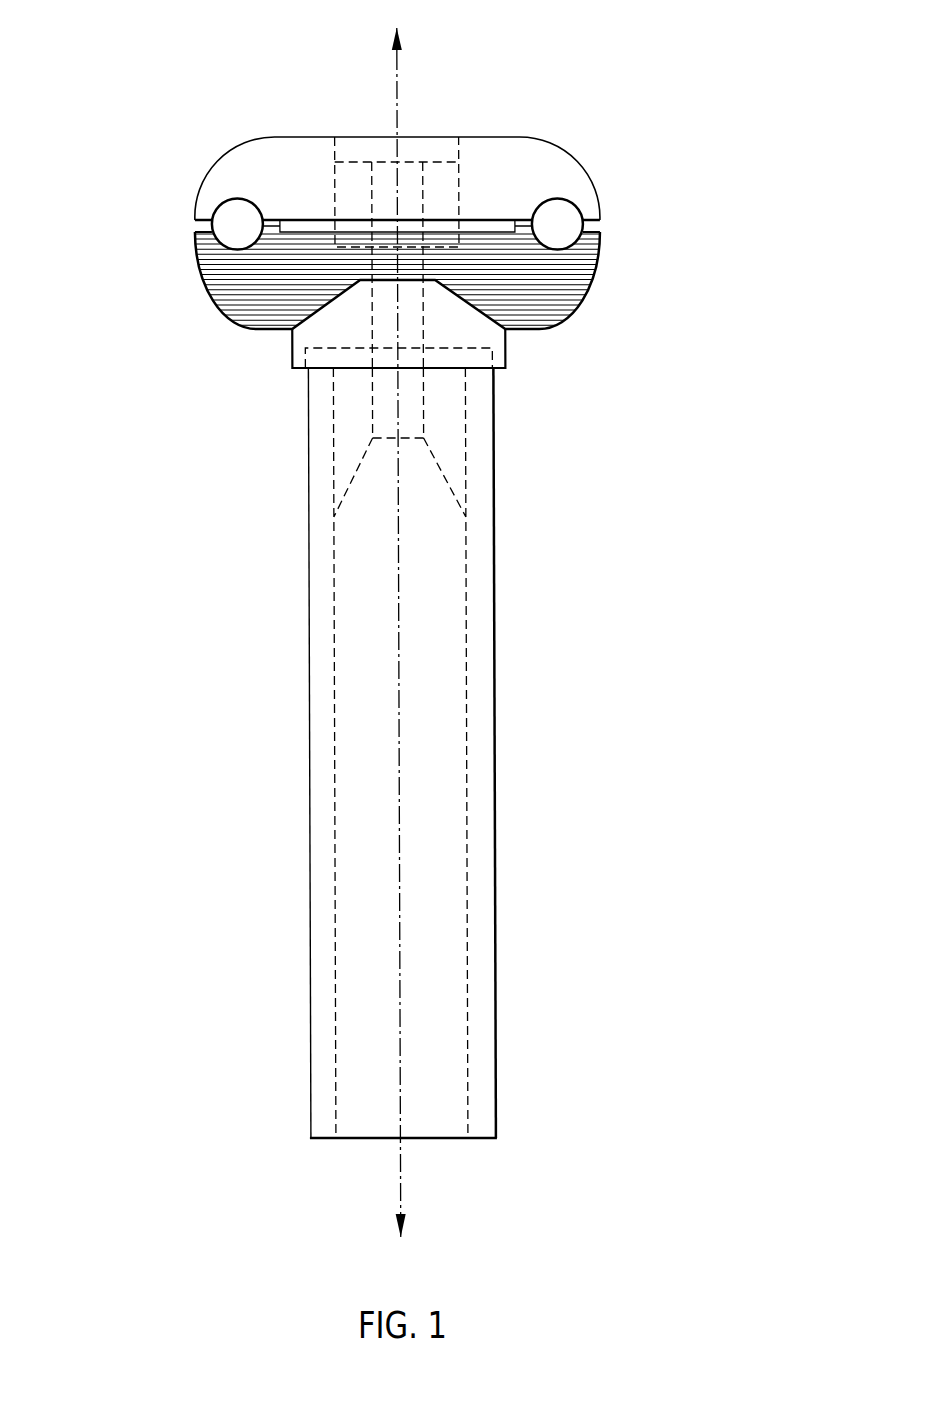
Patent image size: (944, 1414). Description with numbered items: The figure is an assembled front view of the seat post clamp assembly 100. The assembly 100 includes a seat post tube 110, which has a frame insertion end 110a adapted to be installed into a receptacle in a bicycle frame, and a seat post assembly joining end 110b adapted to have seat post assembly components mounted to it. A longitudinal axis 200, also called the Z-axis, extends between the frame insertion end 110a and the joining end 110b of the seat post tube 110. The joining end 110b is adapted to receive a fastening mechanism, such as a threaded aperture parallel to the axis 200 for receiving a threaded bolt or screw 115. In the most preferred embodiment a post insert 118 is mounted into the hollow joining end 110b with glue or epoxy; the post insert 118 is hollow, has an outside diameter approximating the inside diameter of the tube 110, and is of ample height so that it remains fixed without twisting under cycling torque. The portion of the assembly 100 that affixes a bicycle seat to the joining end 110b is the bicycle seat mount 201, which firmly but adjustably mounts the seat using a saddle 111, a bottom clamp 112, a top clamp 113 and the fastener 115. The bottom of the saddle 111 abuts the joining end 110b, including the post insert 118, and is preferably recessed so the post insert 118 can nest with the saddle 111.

The seat post assembly 100 is at (248, 538).
The seat post tube 110 is at (494, 592).
The frame insertion end 110a is at (463, 1138).
The seat post assembly joining end 110b is at (495, 377).
The saddle 111 is at (505, 327).
The bottom clamp 112 is at (598, 248).
The top clamp 113 is at (592, 180).
The bolt or screw 115 is at (458, 137).
The post insert 118 is at (490, 350).
The longitudinal axis 200 is at (401, 636).
The bicycle seat mount 201 is at (122, 127).